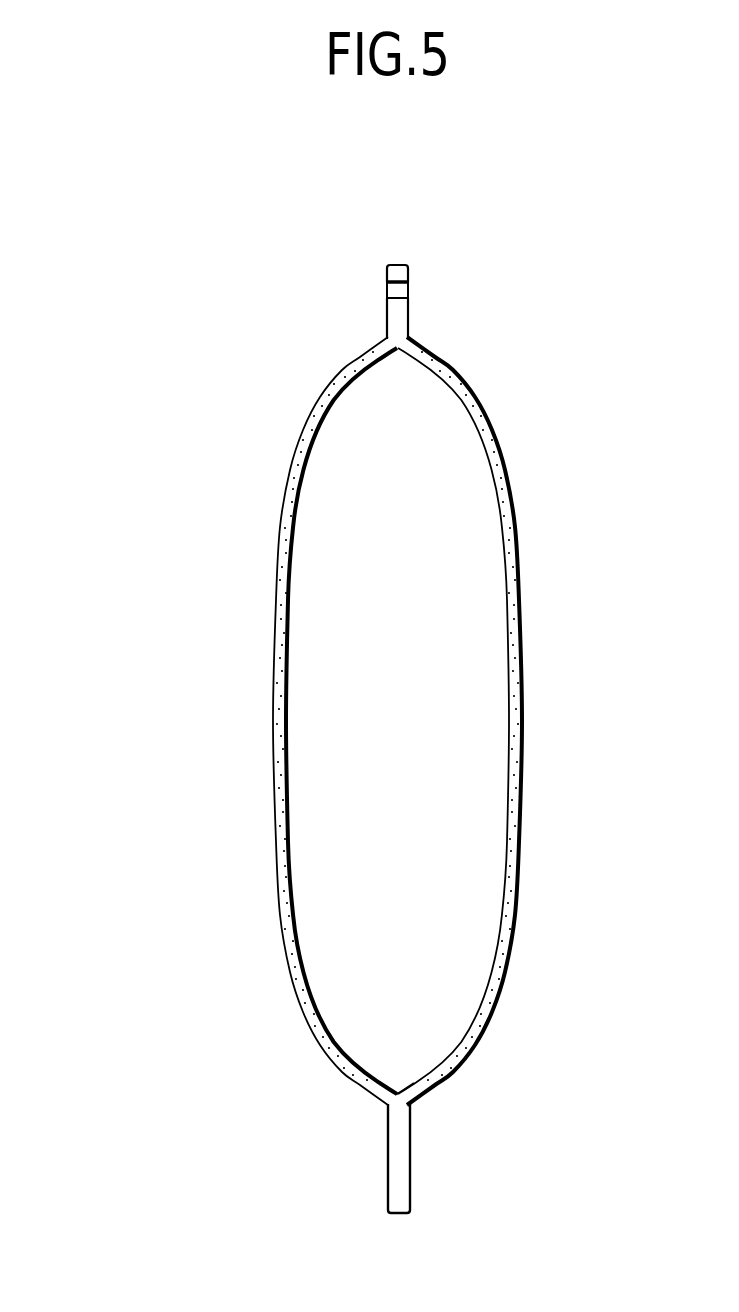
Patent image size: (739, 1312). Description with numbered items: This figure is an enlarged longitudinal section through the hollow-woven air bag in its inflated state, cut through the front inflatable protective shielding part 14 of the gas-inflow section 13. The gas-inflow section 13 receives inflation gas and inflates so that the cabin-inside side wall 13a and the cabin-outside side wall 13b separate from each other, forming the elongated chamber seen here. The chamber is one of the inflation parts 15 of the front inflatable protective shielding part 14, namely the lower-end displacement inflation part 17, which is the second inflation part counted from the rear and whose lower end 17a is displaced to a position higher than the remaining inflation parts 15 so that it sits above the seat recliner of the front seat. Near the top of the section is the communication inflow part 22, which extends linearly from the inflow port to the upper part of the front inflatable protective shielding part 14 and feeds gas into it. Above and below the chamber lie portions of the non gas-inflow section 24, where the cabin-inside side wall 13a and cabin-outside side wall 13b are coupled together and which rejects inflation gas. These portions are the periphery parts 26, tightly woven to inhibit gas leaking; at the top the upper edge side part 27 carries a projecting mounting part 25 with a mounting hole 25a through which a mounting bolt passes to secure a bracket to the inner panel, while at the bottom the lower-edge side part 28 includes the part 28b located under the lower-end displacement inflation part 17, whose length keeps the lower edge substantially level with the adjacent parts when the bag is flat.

The mounting part 25 is at (333, 254).
The non gas-inflow section 24 is at (387, 273).
The mounting hole 25a is at (402, 290).
The periphery part 26 is at (328, 319).
The upper edge side part 27 is at (387, 323).
The communication inflow part 22 is at (445, 420).
The cabin-inside side wall 13a is at (278, 522).
The cabin-outside side wall 13b is at (517, 552).
The lower-end displacement inflation part 17 is at (337, 728).
The inflation part 15 is at (337, 728).
The front inflatable protective shielding part 14 is at (337, 728).
The gas-inflow section 13 is at (337, 728).
The lower end 17a is at (403, 1073).
The lower-edge side part 28 is at (504, 1158).
The part of the lower-edge side part 28b is at (409, 1180).